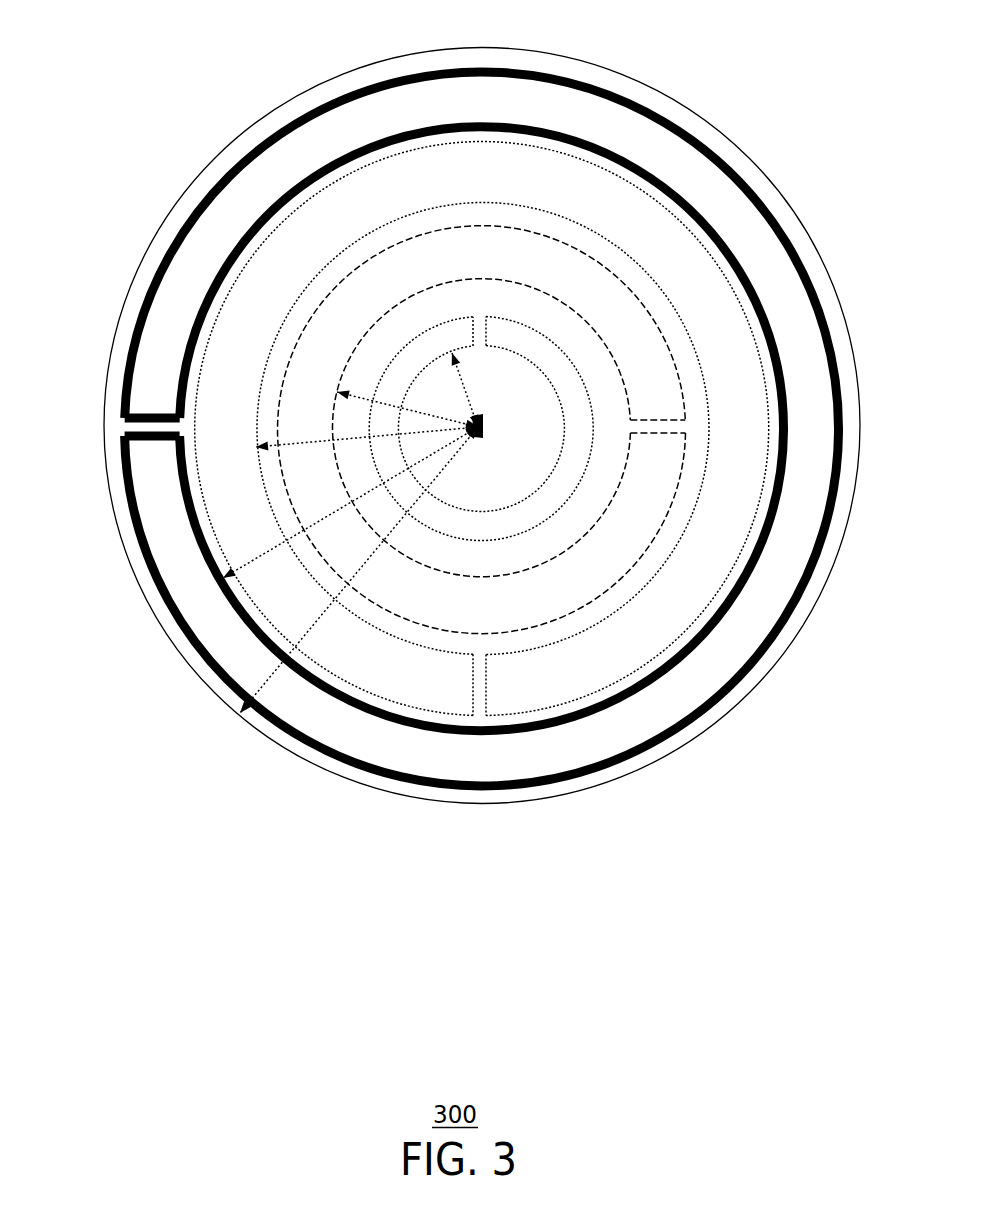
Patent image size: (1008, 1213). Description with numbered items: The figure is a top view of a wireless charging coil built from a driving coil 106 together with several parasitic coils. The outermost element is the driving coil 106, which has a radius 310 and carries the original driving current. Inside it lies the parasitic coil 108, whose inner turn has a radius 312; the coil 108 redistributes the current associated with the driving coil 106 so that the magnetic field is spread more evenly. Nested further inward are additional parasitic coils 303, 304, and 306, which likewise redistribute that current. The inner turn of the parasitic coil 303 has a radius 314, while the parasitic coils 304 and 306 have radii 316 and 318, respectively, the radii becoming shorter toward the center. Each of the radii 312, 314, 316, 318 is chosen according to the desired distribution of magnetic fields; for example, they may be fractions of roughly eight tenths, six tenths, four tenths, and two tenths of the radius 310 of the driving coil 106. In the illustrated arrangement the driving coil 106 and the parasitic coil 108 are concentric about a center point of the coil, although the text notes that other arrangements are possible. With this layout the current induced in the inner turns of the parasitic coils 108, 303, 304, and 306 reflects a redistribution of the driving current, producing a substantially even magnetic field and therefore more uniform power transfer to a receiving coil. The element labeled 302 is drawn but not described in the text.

The driving coil 106 is at (288, 100).
The parasitic coil 108 is at (415, 97).
The slotted conductive ring 302 is at (655, 145).
The parasitic coil 303 is at (652, 243).
The parasitic coil 304 is at (625, 327).
The parasitic coil 306 is at (575, 421).
The radius 310 is at (262, 683).
The radius 312 is at (262, 557).
The radius 314 is at (348, 442).
The radius 316 is at (422, 408).
The radius 318 is at (474, 414).